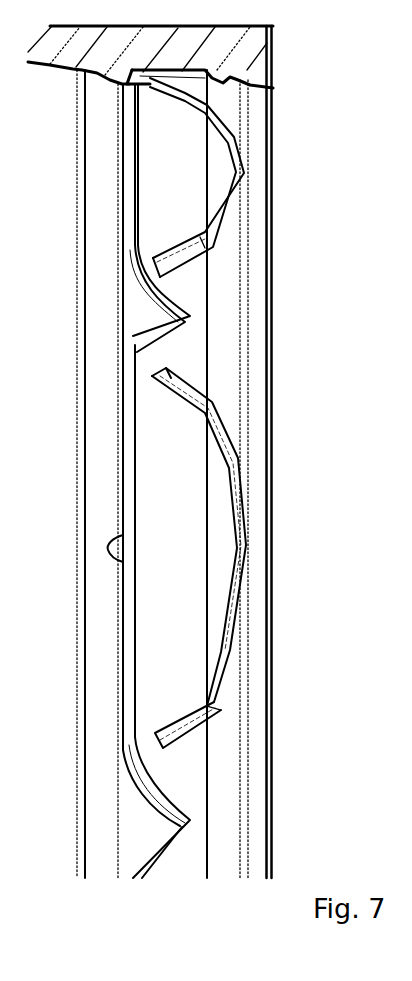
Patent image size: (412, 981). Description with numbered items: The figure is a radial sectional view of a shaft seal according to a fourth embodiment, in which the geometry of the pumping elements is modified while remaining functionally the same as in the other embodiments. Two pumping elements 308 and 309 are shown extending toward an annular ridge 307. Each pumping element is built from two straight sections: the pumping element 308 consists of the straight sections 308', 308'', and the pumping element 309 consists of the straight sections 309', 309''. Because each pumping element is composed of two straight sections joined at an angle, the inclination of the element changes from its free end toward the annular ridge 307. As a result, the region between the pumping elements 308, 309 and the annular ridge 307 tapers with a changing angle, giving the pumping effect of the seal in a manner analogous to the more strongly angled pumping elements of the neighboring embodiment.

The annular ridge 307 is at (244, 320).
The pumping element 308 is at (241, 378).
The straight section 308' is at (286, 430).
The straight section 308'' is at (264, 372).
The pumping element 309 is at (253, 413).
The straight section 309' is at (288, 611).
The straight section 309'' is at (265, 723).